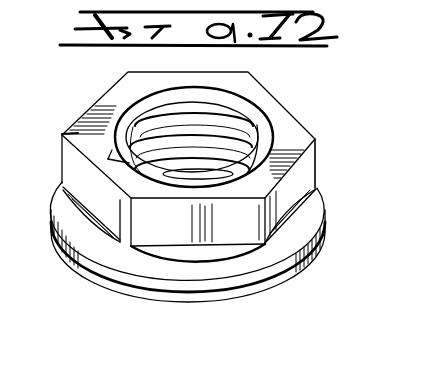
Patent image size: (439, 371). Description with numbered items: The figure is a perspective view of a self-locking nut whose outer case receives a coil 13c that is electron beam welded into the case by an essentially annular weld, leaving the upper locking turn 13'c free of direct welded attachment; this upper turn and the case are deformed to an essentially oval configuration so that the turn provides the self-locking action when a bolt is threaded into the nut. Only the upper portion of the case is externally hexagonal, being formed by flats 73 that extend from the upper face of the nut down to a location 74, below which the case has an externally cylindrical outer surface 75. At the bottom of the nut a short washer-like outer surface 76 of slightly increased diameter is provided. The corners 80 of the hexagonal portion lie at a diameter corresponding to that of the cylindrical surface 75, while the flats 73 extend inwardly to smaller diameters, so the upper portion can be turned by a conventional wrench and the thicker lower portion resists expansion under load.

The flats 73 is at (303, 122).
The corners 80 is at (315, 140).
The location 74 is at (317, 188).
The externally cylindrical outer surface 75 is at (308, 243).
The washer-like outer surface 76 is at (312, 263).
The coil 13c is at (245, 180).
The upper locking turn 13'c is at (169, 125).